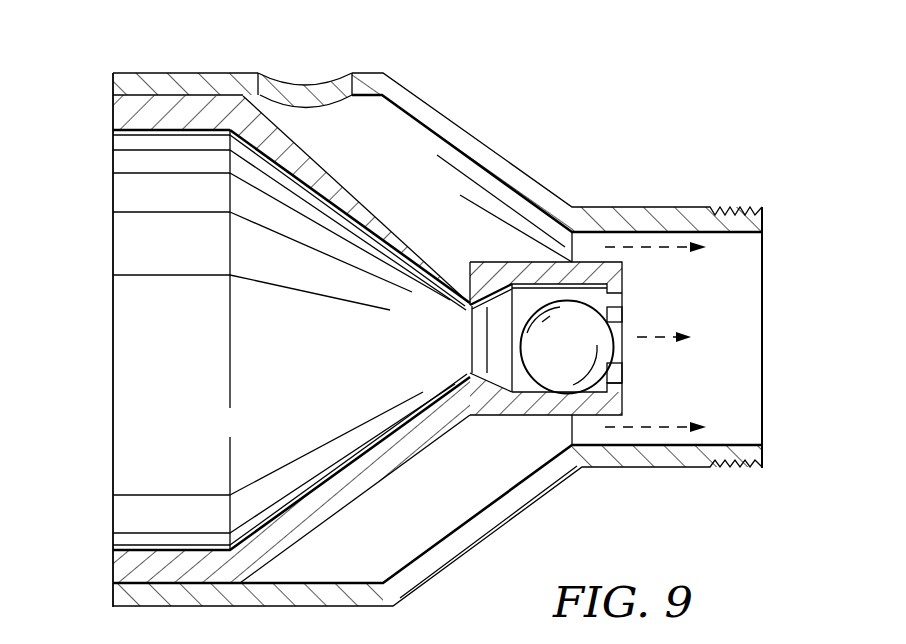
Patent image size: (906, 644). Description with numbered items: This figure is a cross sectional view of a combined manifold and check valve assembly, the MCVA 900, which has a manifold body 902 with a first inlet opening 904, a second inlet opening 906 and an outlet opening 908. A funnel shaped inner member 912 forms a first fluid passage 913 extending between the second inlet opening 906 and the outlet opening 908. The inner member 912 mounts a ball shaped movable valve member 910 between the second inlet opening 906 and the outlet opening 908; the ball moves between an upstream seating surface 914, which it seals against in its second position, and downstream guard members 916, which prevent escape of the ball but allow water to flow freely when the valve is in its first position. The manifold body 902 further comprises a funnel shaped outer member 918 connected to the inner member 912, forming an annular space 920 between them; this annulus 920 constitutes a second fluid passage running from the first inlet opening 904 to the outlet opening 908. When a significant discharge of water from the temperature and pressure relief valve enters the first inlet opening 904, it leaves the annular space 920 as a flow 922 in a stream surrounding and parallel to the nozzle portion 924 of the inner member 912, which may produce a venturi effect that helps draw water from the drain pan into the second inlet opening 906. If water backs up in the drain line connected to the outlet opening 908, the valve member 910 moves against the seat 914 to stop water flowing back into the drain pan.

The MCVA 900 is at (596, 160).
The manifold body 902 is at (477, 133).
The first inlet opening 904 is at (316, 124).
The second inlet opening 906 is at (135, 388).
The outlet opening 908 is at (778, 328).
The movable valve member 910 is at (520, 322).
The funnel shaped inner member 912 is at (368, 481).
The first fluid passage 913 is at (345, 352).
The upstream seating surface 914 is at (490, 373).
The guard members 916 is at (623, 297).
The funnel shaped outer member 918 is at (508, 518).
The annular space 920 is at (422, 175).
The flow 922 is at (672, 247).
The nozzle portion 924 is at (660, 337).